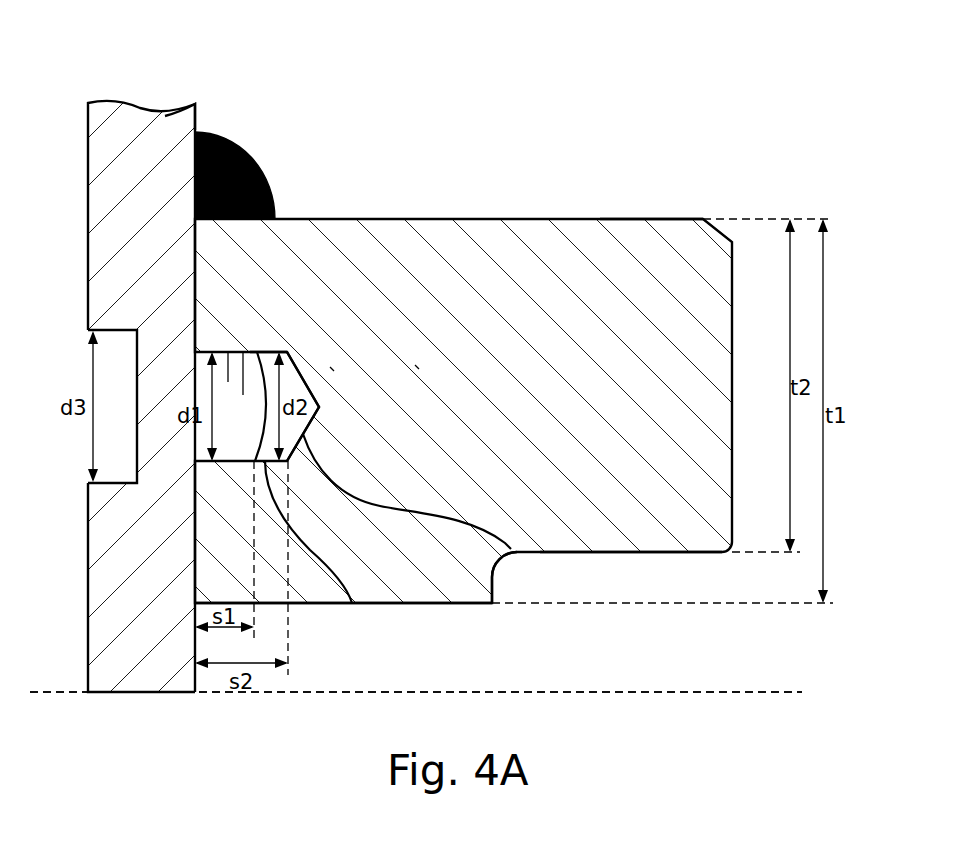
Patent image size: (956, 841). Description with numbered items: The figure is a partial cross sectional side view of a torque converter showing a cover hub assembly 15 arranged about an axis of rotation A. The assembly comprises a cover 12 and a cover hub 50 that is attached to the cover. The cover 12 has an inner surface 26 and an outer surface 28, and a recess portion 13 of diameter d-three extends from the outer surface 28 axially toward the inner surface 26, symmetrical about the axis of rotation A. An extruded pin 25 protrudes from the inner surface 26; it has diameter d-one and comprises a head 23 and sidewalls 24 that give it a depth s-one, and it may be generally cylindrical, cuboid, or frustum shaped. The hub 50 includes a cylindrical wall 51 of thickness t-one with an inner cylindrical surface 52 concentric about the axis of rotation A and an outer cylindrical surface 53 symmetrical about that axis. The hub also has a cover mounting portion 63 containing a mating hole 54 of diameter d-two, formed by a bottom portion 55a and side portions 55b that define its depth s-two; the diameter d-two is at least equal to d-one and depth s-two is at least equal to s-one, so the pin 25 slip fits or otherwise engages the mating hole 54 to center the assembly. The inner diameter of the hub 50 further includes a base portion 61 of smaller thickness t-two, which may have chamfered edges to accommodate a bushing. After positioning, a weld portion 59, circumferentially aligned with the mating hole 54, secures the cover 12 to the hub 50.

The cover 12 is at (152, 244).
The recess portion 13 is at (135, 387).
The cover hub assembly 15 is at (752, 204).
The head 23 is at (268, 350).
The sidewalls 24 is at (233, 382).
The extruded pin 25 is at (243, 395).
The inner surface 26 is at (197, 108).
The outer surface 28 is at (88, 575).
The cover hub 50 is at (469, 417).
The cylindrical wall 51 is at (415, 365).
The inner cylindrical surface 52 is at (447, 604).
The outer cylindrical surface 53 is at (668, 219).
The mating hole 54 is at (330, 365).
The bottom portion 55a is at (478, 524).
The side portions 55b is at (290, 348).
The weld portion 59 is at (268, 177).
The base portion 61 is at (617, 553).
The cover mounting portion 63 is at (330, 367).
The axis of rotation A is at (752, 693).